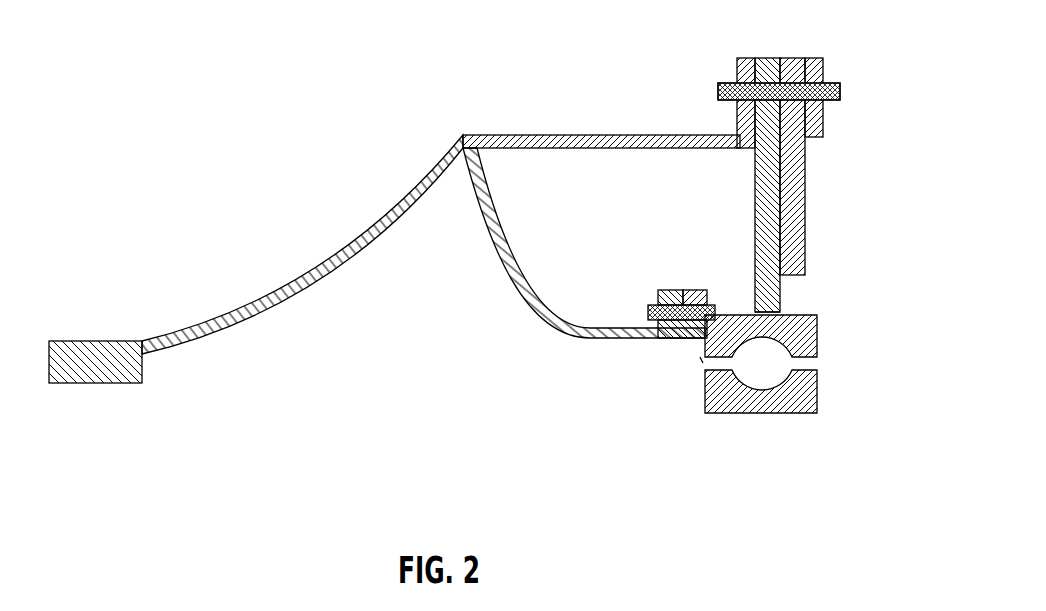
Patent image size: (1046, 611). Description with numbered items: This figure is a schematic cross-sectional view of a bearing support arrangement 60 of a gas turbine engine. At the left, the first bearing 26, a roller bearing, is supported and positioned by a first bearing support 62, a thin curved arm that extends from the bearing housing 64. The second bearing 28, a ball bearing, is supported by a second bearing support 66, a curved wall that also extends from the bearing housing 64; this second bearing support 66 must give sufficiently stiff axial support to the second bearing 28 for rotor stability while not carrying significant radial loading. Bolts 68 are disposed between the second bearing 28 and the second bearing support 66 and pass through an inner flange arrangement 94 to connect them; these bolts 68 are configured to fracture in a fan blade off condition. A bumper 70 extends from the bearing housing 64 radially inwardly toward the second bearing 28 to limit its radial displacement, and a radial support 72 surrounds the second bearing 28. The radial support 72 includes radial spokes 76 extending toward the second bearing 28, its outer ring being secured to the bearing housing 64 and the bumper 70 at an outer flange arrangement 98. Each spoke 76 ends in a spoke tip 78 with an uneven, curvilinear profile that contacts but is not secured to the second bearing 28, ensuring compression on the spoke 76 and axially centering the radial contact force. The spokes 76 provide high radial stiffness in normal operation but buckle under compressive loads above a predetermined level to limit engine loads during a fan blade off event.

The first bearing 26 is at (97, 370).
The second bearing 28 is at (731, 391).
The bearing support arrangement 60 is at (138, 33).
The first bearing support 62 is at (247, 297).
The bearing housing 64 is at (562, 135).
The second bearing support 66 is at (540, 311).
The bolts 68 is at (687, 288).
The bumper 70 is at (808, 197).
The radial support 72 is at (762, 152).
The radial spokes 76 is at (752, 233).
The spoke tip 78 is at (779, 312).
The inner flange arrangement 94 is at (684, 359).
The outer flange arrangement 98 is at (818, 33).